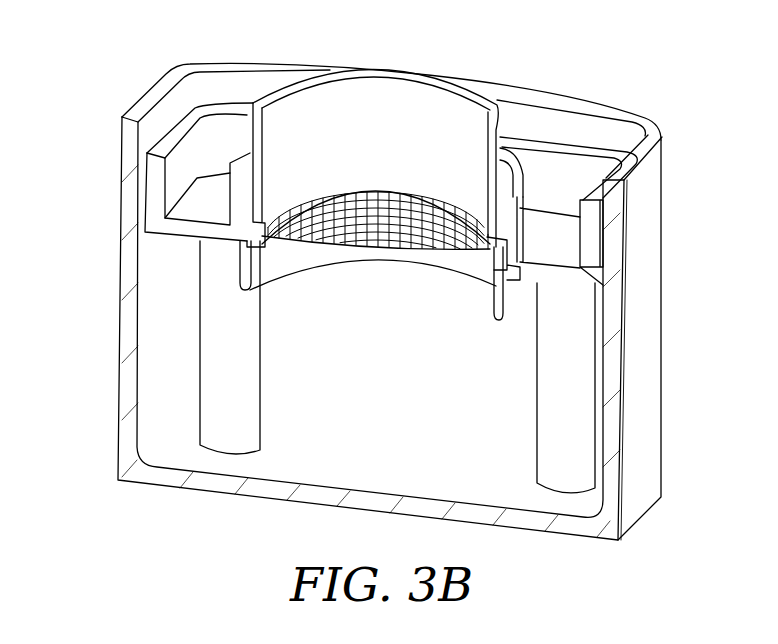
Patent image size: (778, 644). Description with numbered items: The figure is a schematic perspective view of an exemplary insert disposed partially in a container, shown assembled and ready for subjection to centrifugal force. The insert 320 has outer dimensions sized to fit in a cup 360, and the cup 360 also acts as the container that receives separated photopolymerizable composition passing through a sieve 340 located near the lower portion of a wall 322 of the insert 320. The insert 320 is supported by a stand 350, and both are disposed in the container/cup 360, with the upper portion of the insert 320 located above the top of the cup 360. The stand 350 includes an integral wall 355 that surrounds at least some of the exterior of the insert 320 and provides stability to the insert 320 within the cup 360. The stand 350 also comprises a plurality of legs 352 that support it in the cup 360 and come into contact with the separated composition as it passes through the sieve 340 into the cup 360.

The insert 320 is at (468, 120).
The wall 322 is at (493, 235).
The sieve 340 is at (358, 240).
The stand 350 is at (547, 272).
The legs 352 is at (210, 408).
The integral wall 355 is at (510, 173).
The cup 360 is at (640, 443).